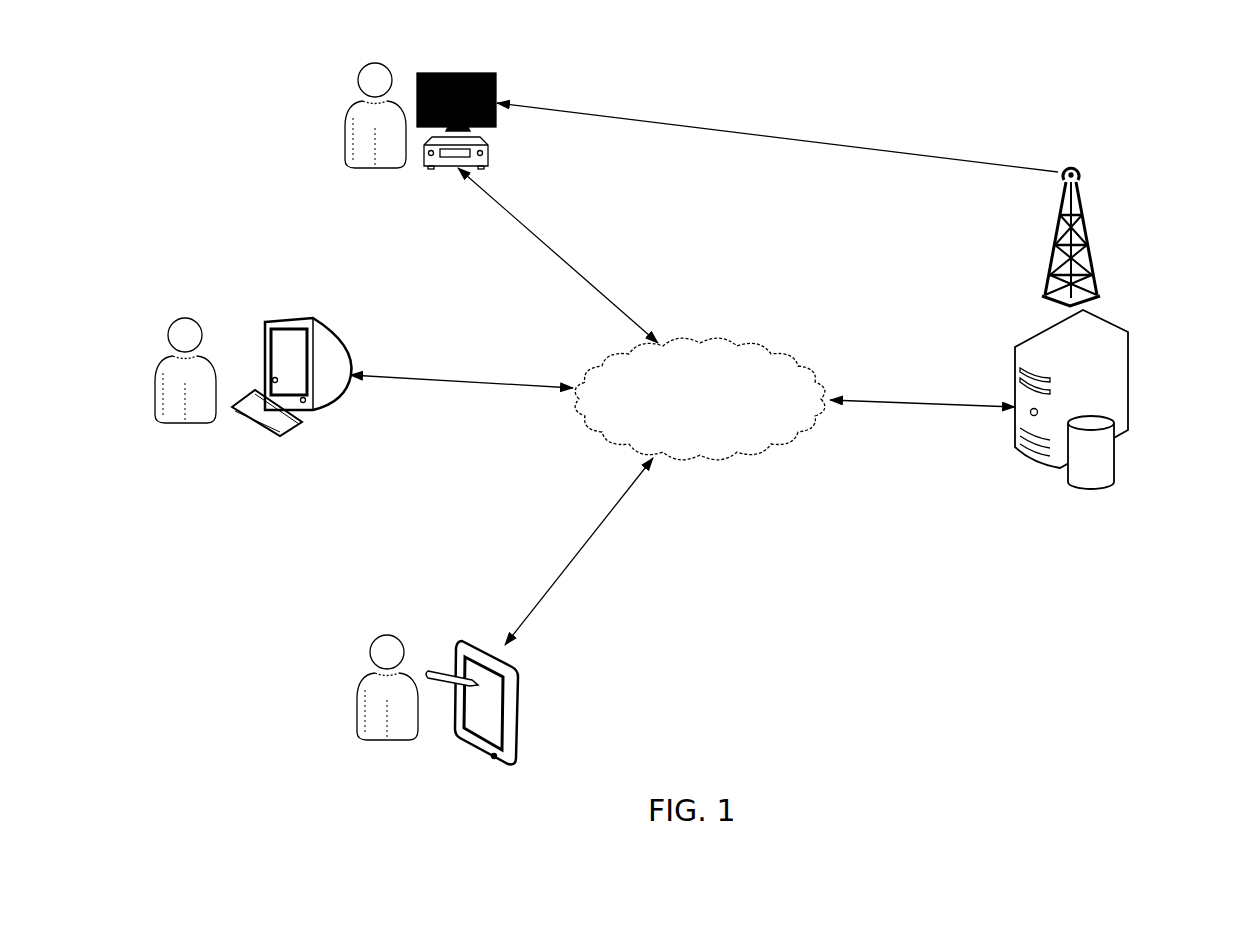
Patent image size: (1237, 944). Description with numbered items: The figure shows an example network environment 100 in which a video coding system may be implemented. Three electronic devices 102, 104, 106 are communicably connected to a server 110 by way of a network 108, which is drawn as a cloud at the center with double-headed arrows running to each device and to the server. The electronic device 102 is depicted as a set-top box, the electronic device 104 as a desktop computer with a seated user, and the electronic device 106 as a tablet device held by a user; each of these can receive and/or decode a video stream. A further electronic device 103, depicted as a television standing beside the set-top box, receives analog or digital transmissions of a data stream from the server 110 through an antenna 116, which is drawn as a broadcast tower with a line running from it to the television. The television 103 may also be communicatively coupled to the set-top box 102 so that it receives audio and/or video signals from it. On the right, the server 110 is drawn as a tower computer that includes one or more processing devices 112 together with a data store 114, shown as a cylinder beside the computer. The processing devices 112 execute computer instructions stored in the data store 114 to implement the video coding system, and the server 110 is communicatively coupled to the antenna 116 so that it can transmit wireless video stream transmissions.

The network environment 100 is at (1123, 37).
The electronic device 102 is at (498, 143).
The electronic device 103 is at (420, 102).
The electronic device 104 is at (276, 372).
The electronic device 106 is at (437, 687).
The network 108 is at (700, 381).
The server 110 is at (1019, 487).
The processing devices 112 is at (1096, 371).
The data store 114 is at (1130, 462).
The antenna 116 is at (1107, 237).